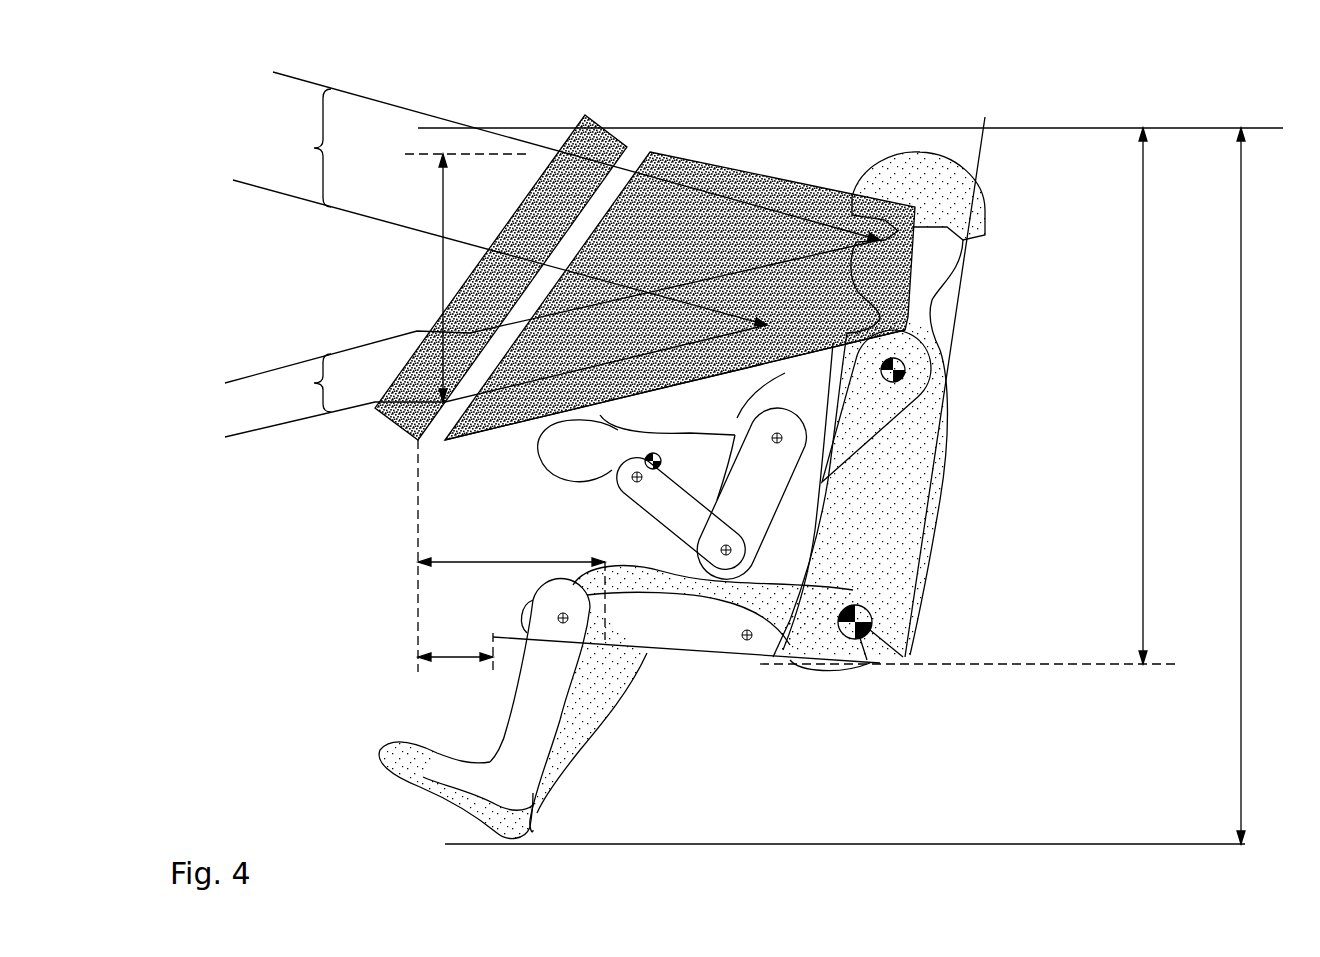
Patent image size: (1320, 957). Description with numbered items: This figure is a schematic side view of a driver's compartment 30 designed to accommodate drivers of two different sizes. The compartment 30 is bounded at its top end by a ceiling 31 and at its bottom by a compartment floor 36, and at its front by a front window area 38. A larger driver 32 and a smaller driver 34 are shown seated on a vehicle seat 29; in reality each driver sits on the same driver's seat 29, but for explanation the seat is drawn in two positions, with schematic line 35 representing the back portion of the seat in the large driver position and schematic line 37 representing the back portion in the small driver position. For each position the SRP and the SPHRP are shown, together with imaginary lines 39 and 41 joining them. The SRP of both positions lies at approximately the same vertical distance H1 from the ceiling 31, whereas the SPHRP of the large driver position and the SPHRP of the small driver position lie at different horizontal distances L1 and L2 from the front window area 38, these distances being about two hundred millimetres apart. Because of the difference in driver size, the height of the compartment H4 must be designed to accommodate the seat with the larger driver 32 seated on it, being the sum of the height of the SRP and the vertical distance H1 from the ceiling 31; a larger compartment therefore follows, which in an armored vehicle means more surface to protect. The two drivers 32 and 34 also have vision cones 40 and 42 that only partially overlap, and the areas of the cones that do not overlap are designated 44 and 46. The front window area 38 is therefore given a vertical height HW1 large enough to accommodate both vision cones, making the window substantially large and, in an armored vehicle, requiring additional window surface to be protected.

The vehicle seat 29 is at (969, 419).
The driver's compartment 30 is at (756, 457).
The ceiling 31 is at (703, 127).
The larger driver 32 is at (1005, 212).
The smaller driver 34 is at (722, 410).
The schematic line (seat back, large driver position) 35 is at (980, 152).
The compartment floor 36 is at (888, 844).
The schematic line (seat back, small driver position) 37 is at (792, 562).
The front window area 38 is at (392, 433).
The imaginary line 39 is at (885, 658).
The vision cone 40 is at (672, 163).
The imaginary line 41 is at (750, 660).
The vision cone 42 is at (532, 400).
The non-overlapping vision cone area 44 is at (552, 338).
The non-overlapping vision cone area 46 is at (556, 199).
The vertical distance H1 is at (975, 396).
The compartment height H4 is at (1262, 486).
The front window vertical height HW1 is at (452, 278).
The horizontal distance L1 is at (511, 556).
The horizontal distance L2 is at (455, 650).
The seat position hip reference point SPHRP is at (489, 633).
The seat reference point SRP is at (750, 645).